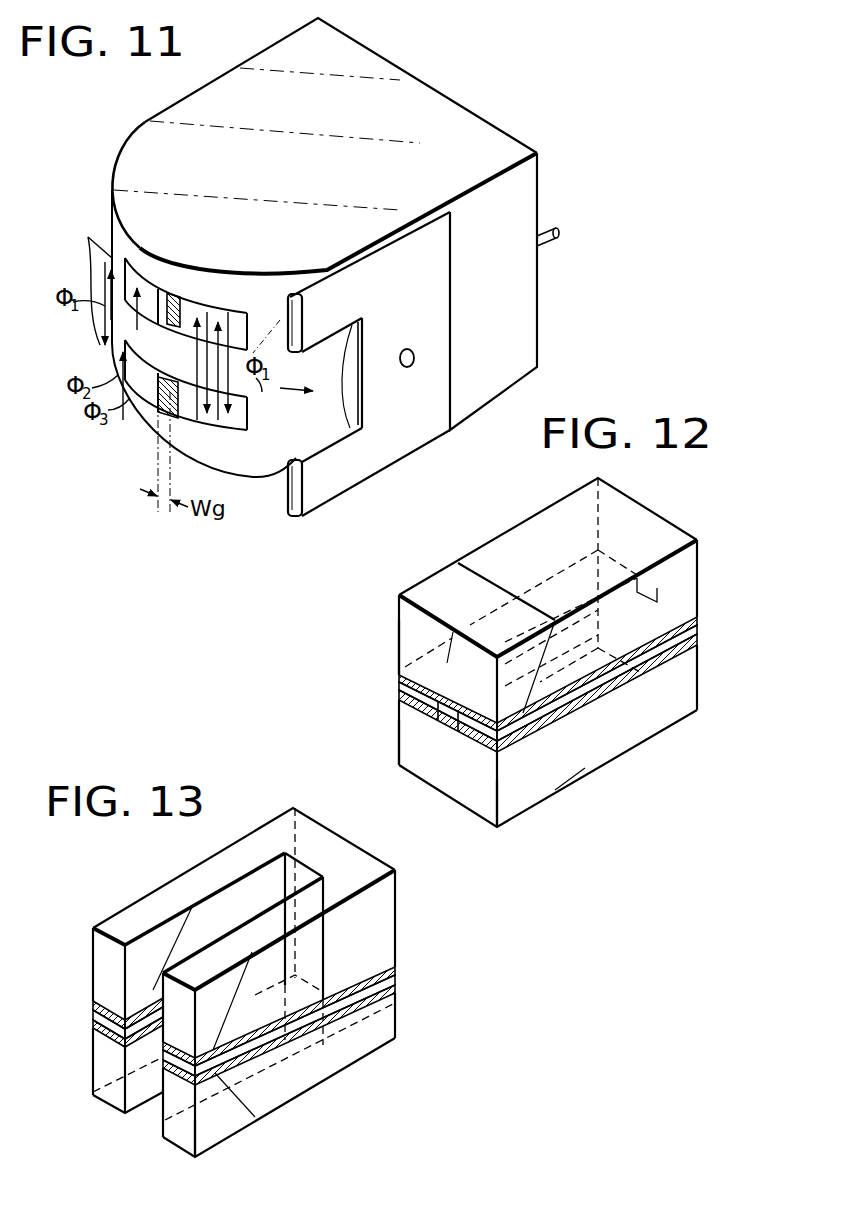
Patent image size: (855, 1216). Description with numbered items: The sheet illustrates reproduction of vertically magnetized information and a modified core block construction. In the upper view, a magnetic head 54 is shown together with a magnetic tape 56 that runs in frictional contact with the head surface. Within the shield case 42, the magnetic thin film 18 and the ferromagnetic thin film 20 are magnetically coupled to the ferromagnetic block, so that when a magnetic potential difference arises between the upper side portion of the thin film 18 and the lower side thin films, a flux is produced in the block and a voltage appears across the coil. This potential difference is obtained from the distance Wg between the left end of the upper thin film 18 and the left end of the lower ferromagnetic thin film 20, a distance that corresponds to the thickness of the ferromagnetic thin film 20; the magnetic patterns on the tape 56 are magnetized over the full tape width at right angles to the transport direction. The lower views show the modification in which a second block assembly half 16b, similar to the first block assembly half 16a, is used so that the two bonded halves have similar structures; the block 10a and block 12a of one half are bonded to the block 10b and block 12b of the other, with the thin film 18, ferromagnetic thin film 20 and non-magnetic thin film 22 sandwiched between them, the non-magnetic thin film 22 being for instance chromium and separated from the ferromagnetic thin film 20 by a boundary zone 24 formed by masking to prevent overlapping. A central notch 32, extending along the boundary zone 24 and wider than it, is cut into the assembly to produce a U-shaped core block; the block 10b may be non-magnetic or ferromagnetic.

In FIG. 11, the shield case 42 is at (240, 88).
In FIG. 11, the magnetic head 54 is at (496, 84).
In FIG. 11, the magnetic tape 56 is at (266, 428).
In FIG. 11, the non-magnetic thin film 22 is at (168, 292).
In FIG. 12, the non-magnetic thin film 22 is at (697, 622).
In FIG. 13, the non-magnetic thin film 22 is at (396, 960).
In FIG. 11, the ferromagnetic thin film 20 is at (152, 413).
In FIG. 12, the ferromagnetic thin film 20 is at (399, 683).
In FIG. 13, the ferromagnetic thin film 20 is at (102, 1013).
In FIG. 11, the thin film 18 is at (180, 300).
In FIG. 12, the thin film 18 is at (572, 704).
In FIG. 13, the thin film 18 is at (104, 1031).
In FIG. 12, the block 10a is at (583, 768).
In FIG. 13, the block 10a is at (318, 1078).
In FIG. 12, the block 10b is at (502, 537).
In FIG. 13, the block 10b is at (190, 884).
In FIG. 12, the block 12a is at (513, 813).
In FIG. 13, the block 12a is at (222, 1133).
In FIG. 12, the block 12b is at (437, 582).
In FIG. 13, the block 12b is at (128, 918).
In FIG. 12, the first block assembly half 16a is at (398, 745).
In FIG. 12, the second block assembly half 16b is at (398, 637).
In FIG. 12, the boundary zone 24 is at (448, 704).
In FIG. 13, the central notch 32 is at (207, 928).